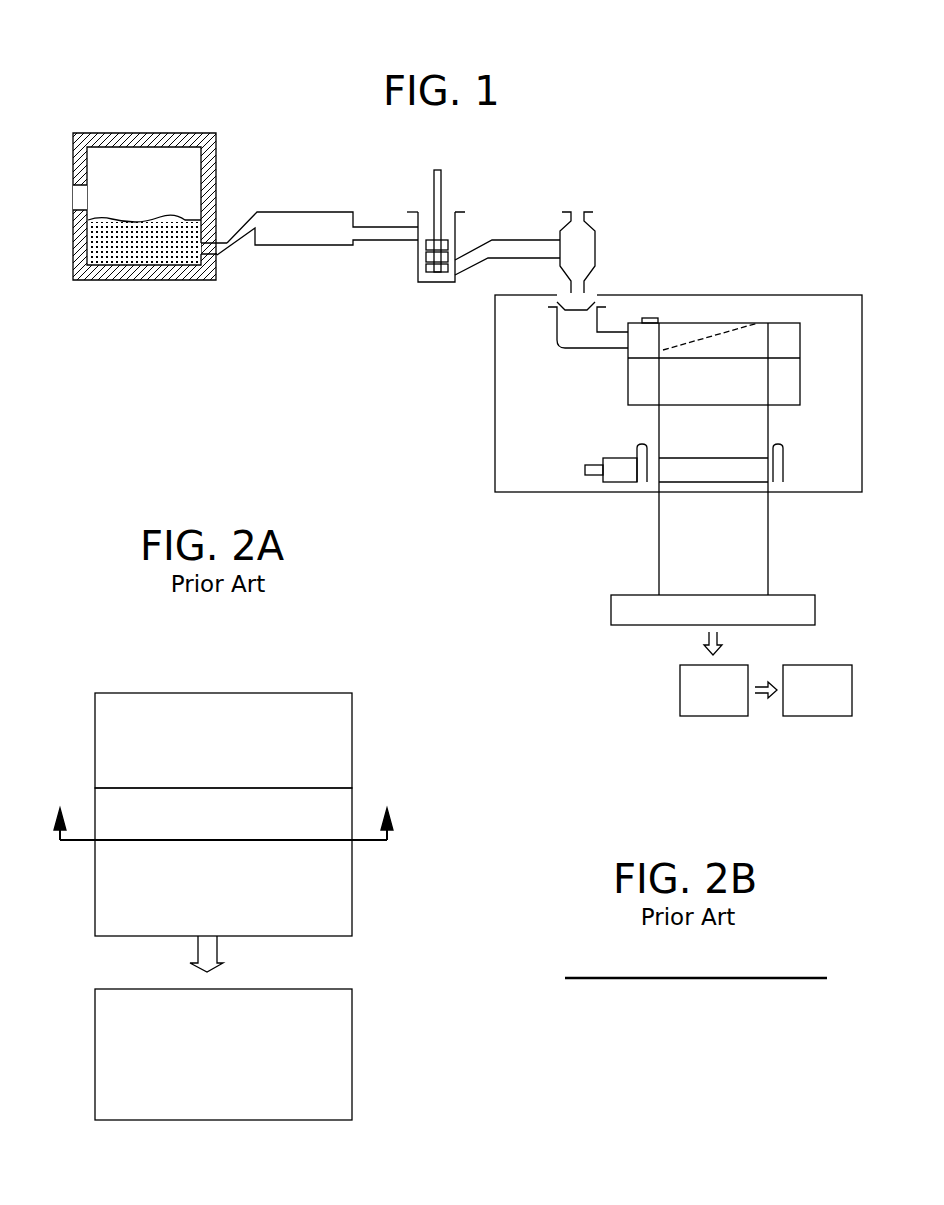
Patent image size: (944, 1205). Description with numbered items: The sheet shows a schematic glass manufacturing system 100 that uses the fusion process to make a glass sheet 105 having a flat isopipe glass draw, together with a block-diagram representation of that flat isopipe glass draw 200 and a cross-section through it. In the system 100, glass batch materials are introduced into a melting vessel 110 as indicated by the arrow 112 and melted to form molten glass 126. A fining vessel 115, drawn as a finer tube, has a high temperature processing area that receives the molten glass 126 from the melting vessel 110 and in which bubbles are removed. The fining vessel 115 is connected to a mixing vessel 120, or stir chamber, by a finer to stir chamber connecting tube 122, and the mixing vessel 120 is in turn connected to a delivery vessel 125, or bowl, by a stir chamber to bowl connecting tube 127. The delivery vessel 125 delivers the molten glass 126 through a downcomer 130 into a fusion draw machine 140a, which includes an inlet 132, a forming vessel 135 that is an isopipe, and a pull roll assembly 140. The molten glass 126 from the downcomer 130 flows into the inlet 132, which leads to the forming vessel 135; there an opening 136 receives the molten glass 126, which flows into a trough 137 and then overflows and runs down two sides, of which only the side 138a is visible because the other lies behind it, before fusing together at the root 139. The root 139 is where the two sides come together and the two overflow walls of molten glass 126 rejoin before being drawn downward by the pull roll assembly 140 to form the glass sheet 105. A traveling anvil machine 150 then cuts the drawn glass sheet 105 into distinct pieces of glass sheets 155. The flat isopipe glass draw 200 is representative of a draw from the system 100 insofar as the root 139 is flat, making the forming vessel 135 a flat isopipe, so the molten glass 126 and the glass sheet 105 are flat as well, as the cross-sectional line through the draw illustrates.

In FIG. 1, the glass manufacturing system 100 is at (686, 162).
In FIG. 1, the glass sheet 105 is at (657, 504).
In FIG. 2A, the glass sheet 105 is at (352, 905).
In FIG. 2B, the glass sheet 105 is at (678, 978).
In FIG. 1, the melting vessel 110 is at (142, 133).
In FIG. 1, the arrow 112 is at (85, 201).
In FIG. 1, the fining vessel 115 is at (276, 212).
In FIG. 1, the mixing vessel 120 is at (456, 232).
In FIG. 1, the finer to stir chamber connecting tube 122 is at (396, 243).
In FIG. 1, the delivery vessel 125 is at (596, 237).
In FIG. 1, the molten glass 126 is at (160, 217).
In FIG. 2A, the molten glass 126 is at (352, 704).
In FIG. 1, the stir chamber to bowl connecting tube 127 is at (530, 259).
In FIG. 1, the downcomer 130 is at (590, 290).
In FIG. 1, the inlet 132 is at (560, 350).
In FIG. 1, the forming vessel 135 is at (800, 340).
In FIG. 1, the opening 136 is at (628, 355).
In FIG. 1, the trough 137 is at (690, 335).
In FIG. 1, the side 138a is at (680, 388).
In FIG. 1, the root 139 is at (736, 405).
In FIG. 1, the pull roll assembly 140 is at (784, 468).
In FIG. 1, the fusion draw machine 140a is at (495, 403).
In FIG. 1, the traveling anvil machine 150 is at (611, 612).
In FIG. 1, the glass sheets 155 is at (680, 696).
In FIG. 2A, the glass sheets 155 is at (352, 1036).
In FIG. 2A, the flat isopipe glass draw 200 is at (223, 655).